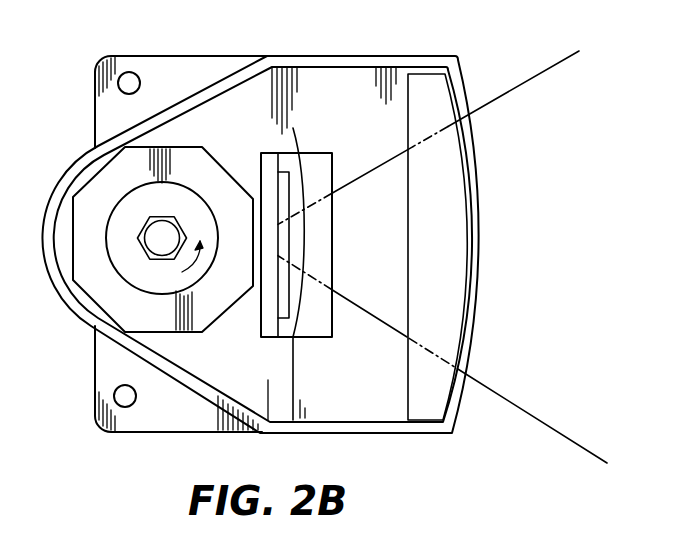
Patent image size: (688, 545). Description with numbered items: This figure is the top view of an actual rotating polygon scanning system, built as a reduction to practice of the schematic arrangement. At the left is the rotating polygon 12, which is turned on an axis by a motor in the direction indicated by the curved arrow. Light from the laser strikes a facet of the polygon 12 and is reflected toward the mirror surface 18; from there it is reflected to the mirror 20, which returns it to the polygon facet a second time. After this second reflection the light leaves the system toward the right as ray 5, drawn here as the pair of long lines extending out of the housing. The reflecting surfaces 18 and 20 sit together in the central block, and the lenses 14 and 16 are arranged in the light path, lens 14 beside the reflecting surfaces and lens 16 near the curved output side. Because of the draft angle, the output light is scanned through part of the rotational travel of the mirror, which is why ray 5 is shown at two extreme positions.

The ray 5 is at (535, 417).
The rotating polygon 12 is at (205, 327).
The lens 14 is at (336, 160).
The lens 16 is at (408, 216).
The mirror surface 18 is at (259, 162).
The mirror 20 is at (287, 162).